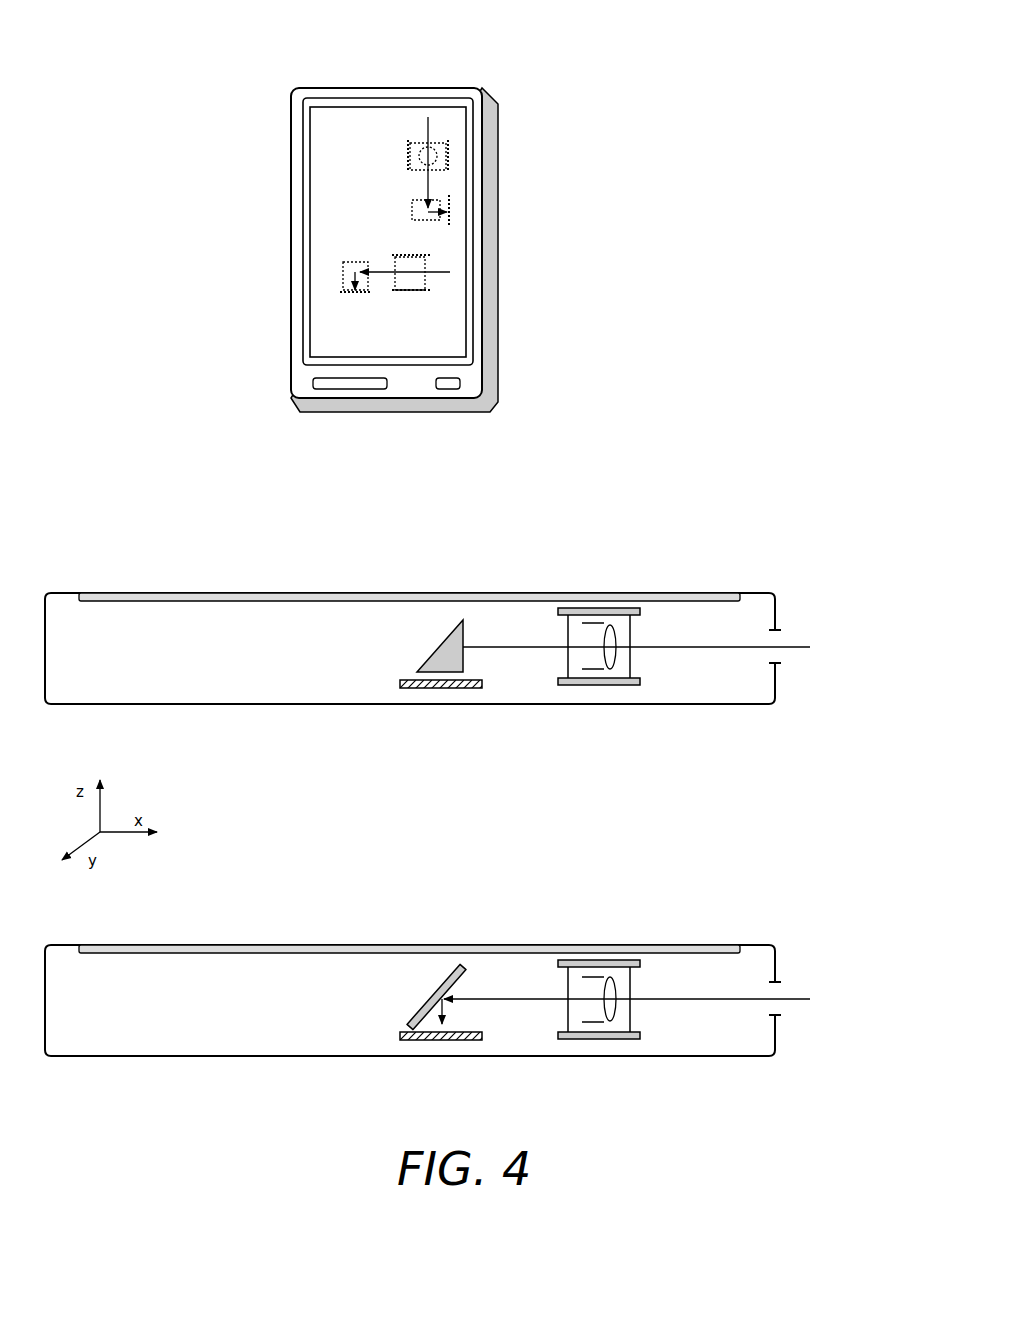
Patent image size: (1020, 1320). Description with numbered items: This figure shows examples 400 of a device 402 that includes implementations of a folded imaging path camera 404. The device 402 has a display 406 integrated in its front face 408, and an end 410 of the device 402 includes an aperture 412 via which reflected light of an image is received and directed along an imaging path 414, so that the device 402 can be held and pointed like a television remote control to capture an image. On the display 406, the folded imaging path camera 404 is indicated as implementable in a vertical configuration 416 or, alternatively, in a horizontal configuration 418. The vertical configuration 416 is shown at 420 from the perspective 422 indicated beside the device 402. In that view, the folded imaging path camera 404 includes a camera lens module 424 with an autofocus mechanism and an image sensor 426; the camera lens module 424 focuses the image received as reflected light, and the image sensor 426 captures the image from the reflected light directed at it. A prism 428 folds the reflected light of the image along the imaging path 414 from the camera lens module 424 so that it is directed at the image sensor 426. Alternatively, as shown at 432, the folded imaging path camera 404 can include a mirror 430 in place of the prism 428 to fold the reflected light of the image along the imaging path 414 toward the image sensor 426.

The examples 400 is at (752, 80).
The device 402 is at (413, 572).
The folded imaging path camera 404 is at (528, 623).
The display 406 is at (328, 180).
The front face 408 is at (300, 385).
The end 410 is at (372, 88).
The aperture 412 is at (782, 637).
The imaging path 414 is at (651, 829).
The vertical configuration 416 is at (440, 130).
The horizontal configuration 418 is at (325, 262).
The view of vertical configuration 420 is at (621, 516).
The perspective 422 is at (514, 176).
The camera lens module 424 is at (630, 686).
The image sensor 426 is at (432, 690).
The prism 428 is at (448, 640).
The mirror 430 is at (437, 985).
The view of mirror implementation 432 is at (621, 891).